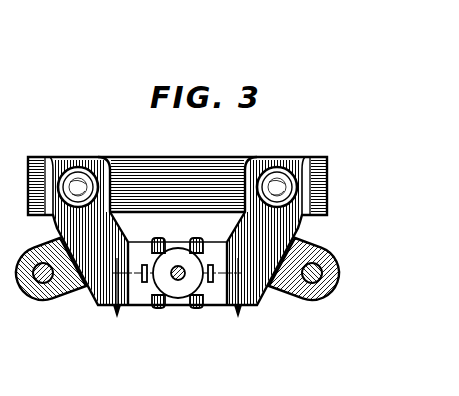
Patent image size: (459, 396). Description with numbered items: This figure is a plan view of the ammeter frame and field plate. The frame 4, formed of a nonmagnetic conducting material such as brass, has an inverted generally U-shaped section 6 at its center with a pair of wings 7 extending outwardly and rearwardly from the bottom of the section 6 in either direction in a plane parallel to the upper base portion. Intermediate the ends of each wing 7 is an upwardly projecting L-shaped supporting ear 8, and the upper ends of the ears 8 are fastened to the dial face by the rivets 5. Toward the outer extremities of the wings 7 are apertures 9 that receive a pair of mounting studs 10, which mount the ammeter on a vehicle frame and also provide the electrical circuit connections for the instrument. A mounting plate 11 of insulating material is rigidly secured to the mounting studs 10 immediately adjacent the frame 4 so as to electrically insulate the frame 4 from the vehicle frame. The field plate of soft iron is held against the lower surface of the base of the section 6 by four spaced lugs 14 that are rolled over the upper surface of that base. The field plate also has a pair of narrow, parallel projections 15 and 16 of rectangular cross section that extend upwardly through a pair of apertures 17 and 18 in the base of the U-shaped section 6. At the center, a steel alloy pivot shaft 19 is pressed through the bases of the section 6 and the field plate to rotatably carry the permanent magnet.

The frame 4 is at (176, 306).
The rivets 5 is at (320, 278).
The inverted generally U-shaped section 6 is at (200, 310).
The wings 7 is at (98, 305).
The L-shaped supporting ear 8 is at (43, 300).
The apertures 9 is at (94, 173).
The mounting studs 10 is at (80, 168).
The mounting plate 11 is at (217, 157).
The lugs 14 is at (160, 308).
The projection 15 is at (150, 240).
The projection 16 is at (203, 240).
The aperture 17 is at (140, 265).
The aperture 18 is at (214, 265).
The pivot shaft 19 is at (177, 282).